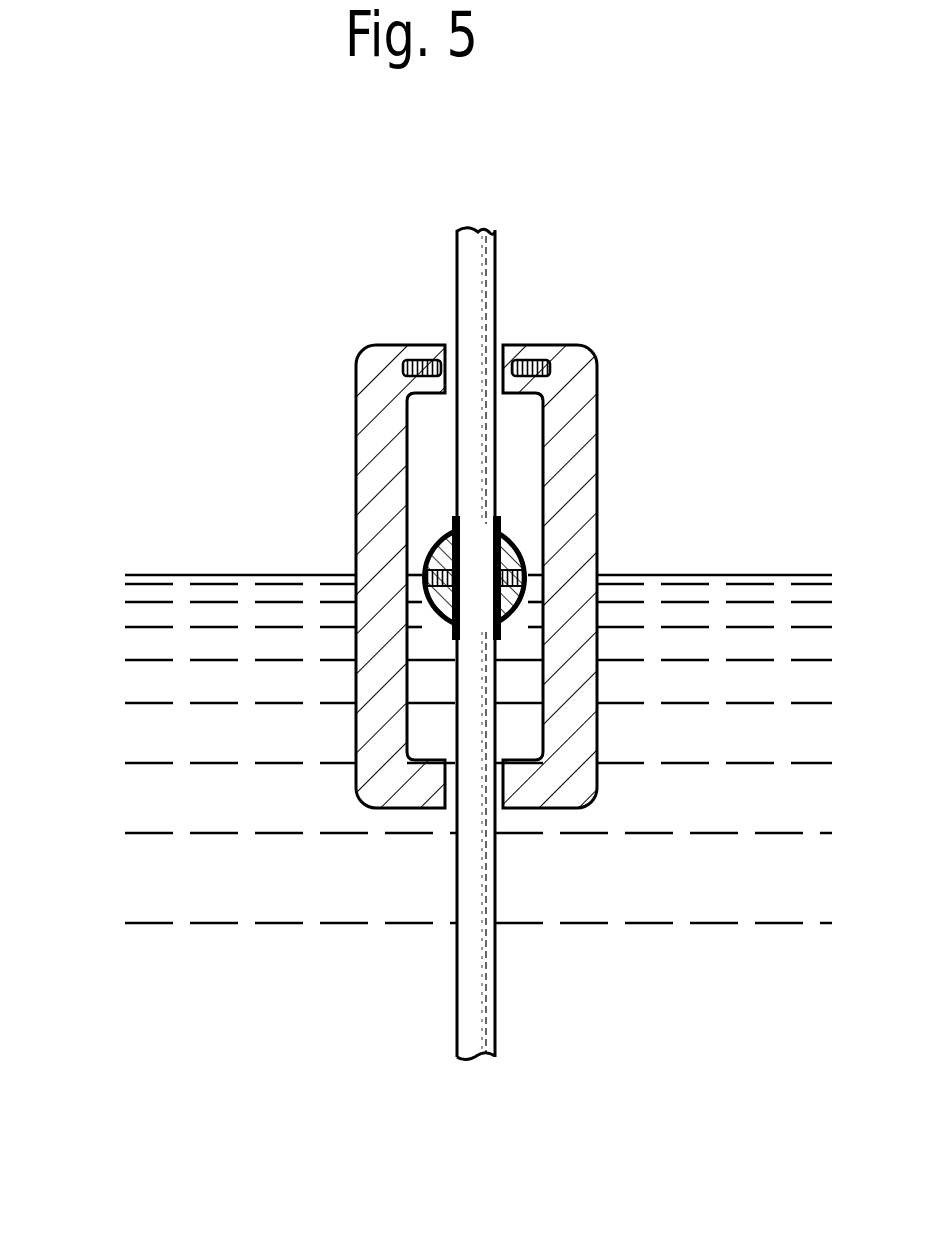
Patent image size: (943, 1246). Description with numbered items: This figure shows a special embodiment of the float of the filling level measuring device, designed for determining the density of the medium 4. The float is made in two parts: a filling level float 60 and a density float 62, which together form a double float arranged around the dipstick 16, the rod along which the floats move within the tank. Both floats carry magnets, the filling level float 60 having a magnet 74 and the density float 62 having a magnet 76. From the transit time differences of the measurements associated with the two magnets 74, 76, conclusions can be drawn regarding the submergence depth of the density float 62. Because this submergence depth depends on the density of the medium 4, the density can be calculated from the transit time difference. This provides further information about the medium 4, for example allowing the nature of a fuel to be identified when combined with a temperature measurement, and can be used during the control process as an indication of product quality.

The medium 4 is at (190, 613).
The dipstick 16 is at (483, 298).
The filling level float 60 is at (513, 537).
The density float 62 is at (378, 717).
The magnet 74 is at (533, 572).
The magnet 76 is at (426, 362).